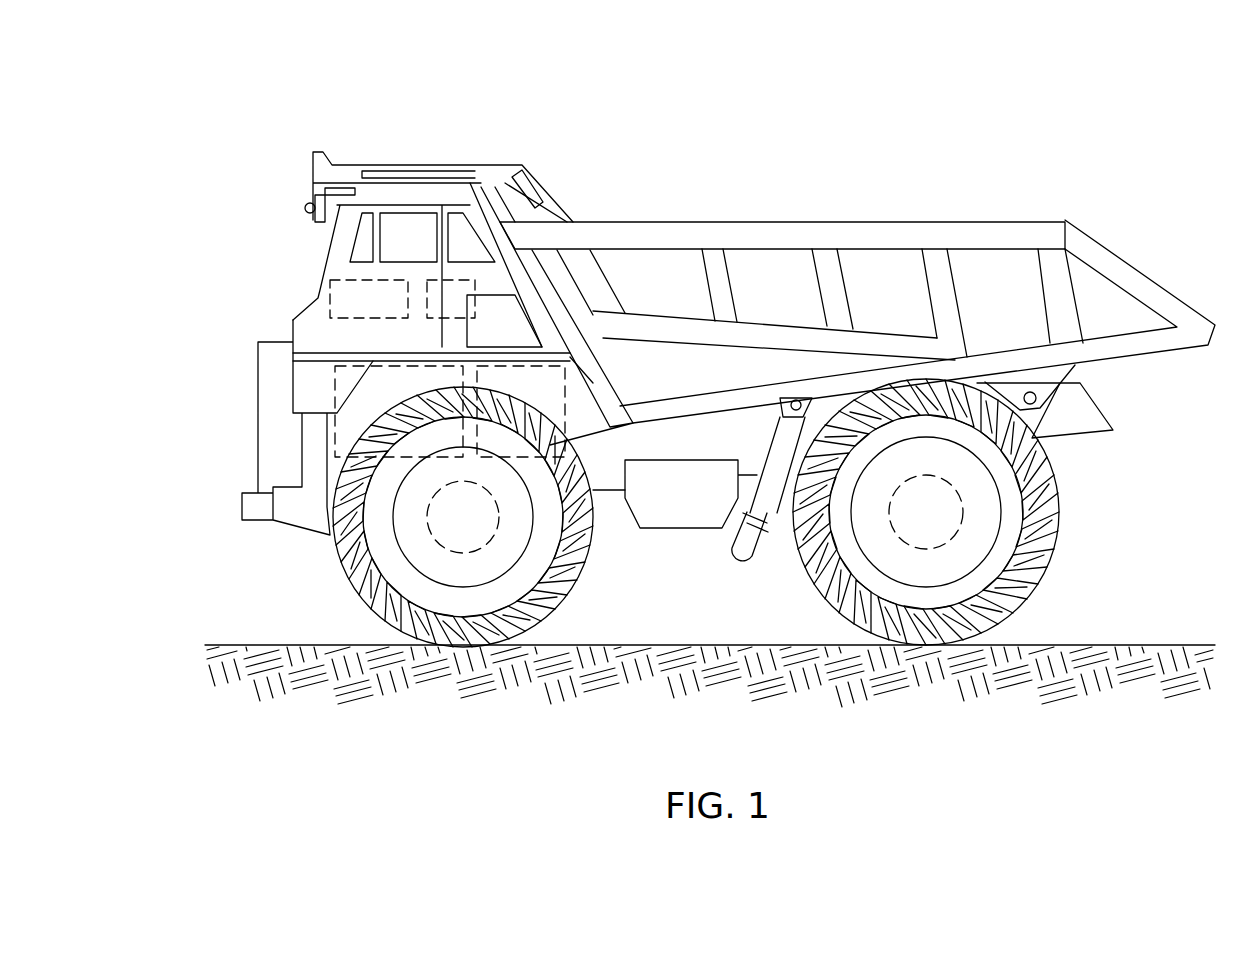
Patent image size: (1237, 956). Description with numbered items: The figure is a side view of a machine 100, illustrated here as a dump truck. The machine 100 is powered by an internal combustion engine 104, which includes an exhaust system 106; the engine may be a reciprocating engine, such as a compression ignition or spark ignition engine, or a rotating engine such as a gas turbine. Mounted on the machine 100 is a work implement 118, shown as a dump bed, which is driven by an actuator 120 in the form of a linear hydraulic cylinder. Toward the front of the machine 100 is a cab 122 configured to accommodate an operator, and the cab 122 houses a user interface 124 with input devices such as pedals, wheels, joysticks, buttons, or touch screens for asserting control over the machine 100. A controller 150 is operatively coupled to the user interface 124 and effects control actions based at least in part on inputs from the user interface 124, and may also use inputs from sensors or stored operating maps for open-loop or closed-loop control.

The machine 100 is at (980, 80).
The internal combustion engine 104 is at (335, 378).
The exhaust system 106 is at (513, 366).
The work implement 118 is at (998, 218).
The actuator 120 is at (783, 497).
The cab 122 is at (245, 207).
The user interface 124 is at (328, 290).
The controller 150 is at (465, 275).